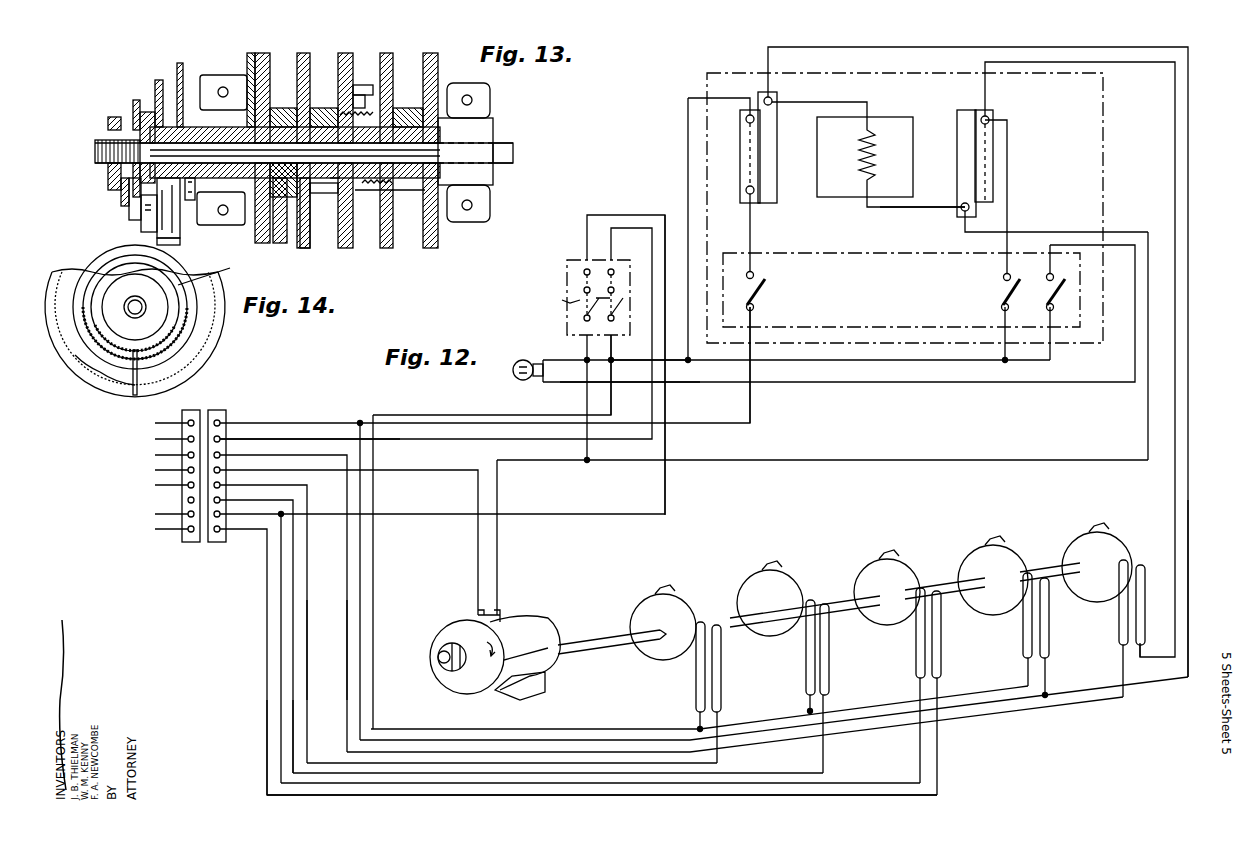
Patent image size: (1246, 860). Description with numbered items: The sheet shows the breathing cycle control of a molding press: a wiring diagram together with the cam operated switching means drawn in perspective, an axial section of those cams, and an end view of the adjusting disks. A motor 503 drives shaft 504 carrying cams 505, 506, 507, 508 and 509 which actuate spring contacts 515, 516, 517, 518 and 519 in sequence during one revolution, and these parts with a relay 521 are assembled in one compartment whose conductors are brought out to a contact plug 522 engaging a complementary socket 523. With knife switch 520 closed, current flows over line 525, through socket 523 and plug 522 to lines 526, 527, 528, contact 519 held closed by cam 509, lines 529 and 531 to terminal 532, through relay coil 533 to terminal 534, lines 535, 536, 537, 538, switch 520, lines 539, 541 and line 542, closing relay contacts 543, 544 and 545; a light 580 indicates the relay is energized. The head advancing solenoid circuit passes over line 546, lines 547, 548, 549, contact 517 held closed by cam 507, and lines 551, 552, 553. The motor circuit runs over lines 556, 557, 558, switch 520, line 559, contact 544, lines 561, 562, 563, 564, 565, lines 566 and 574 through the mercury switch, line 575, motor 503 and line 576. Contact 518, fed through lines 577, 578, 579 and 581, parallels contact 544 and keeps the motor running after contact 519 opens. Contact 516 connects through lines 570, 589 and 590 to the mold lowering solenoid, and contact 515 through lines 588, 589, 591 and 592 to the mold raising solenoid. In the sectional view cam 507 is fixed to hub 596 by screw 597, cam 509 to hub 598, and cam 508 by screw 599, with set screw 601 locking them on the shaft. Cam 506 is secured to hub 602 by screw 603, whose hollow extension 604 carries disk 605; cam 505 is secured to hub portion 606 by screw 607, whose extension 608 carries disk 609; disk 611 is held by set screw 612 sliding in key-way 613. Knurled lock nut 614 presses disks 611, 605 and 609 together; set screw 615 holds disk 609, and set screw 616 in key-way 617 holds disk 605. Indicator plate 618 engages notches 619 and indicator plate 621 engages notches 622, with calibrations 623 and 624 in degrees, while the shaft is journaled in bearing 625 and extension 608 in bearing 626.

In FIG. 12, the motor 503 is at (535, 617).
In FIG. 13, the shaft 504 is at (505, 143).
In FIG. 14, the shaft 504 is at (128, 302).
In FIG. 12, the shaft 504 is at (600, 648).
In FIG. 13, the cam 505 is at (263, 56).
In FIG. 12, the cam 505 is at (680, 600).
In FIG. 13, the cam 506 is at (304, 56).
In FIG. 12, the cam 506 is at (780, 575).
In FIG. 13, the cam 507 is at (345, 56).
In FIG. 12, the cam 507 is at (900, 565).
In FIG. 13, the cam 508 is at (387, 56).
In FIG. 12, the cam 508 is at (1000, 548).
In FIG. 13, the cam 509 is at (432, 56).
In FIG. 12, the cam 509 is at (1103, 535).
In FIG. 12, the spring contact 515 is at (722, 665).
In FIG. 12, the spring contact 516 is at (830, 655).
In FIG. 12, the spring contact 517 is at (942, 640).
In FIG. 12, the spring contact 518 is at (1050, 625).
In FIG. 12, the spring contact 519 is at (1120, 625).
In FIG. 12, the knife switch 520 is at (567, 290).
In FIG. 12, the relay 521 is at (1103, 145).
In FIG. 12, the contact plug 522 is at (226, 412).
In FIG. 12, the socket 523 is at (191, 542).
In FIG. 12, the line 525 is at (146, 422).
In FIG. 12, the line 526 is at (318, 423).
In FIG. 12, the line 527 is at (362, 583).
In FIG. 12, the line 528 is at (760, 720).
In FIG. 12, the line 529 is at (1188, 310).
In FIG. 12, the line 531 is at (900, 49).
In FIG. 12, the relay terminal 532 is at (777, 100).
In FIG. 12, the relay coil 533 is at (875, 125).
In FIG. 12, the relay terminal 534 is at (950, 212).
In FIG. 12, the line 535 is at (1053, 225).
In FIG. 12, the line 536 is at (1148, 413).
In FIG. 12, the line 537 is at (862, 460).
In FIG. 12, the line 538 is at (578, 390).
In FIG. 12, the line 539 is at (668, 404).
In FIG. 12, the line 541 is at (590, 515).
In FIG. 12, the line 542 is at (146, 513).
In FIG. 12, the relay contact 543 is at (760, 292).
In FIG. 12, the relay contact 544 is at (1002, 295).
In FIG. 12, the relay contact 545 is at (1068, 290).
In FIG. 12, the line 546 is at (146, 528).
In FIG. 12, the line 547 is at (267, 650).
In FIG. 12, the line 548 is at (640, 796).
In FIG. 12, the line 549 is at (938, 750).
In FIG. 12, the line 551 is at (910, 770).
In FIG. 12, the line 552 is at (400, 796).
In FIG. 12, the line 553 is at (267, 736).
In FIG. 12, the line 556 is at (146, 438).
In FIG. 12, the line 557 is at (440, 440).
In FIG. 12, the line 558 is at (648, 334).
In FIG. 12, the line 559 is at (822, 362).
In FIG. 12, the line 561 is at (1055, 63).
In FIG. 12, the line 562 is at (188, 500).
In FIG. 12, the line 563 is at (1042, 697).
In FIG. 12, the line 564 is at (347, 635).
In FIG. 12, the line 565 is at (268, 455).
In FIG. 12, the line 566 is at (146, 454).
In FIG. 12, the line 570 is at (778, 773).
In FIG. 12, the line 574 is at (144, 468).
In FIG. 12, the line 575 is at (397, 471).
In FIG. 12, the line 576 is at (499, 562).
In FIG. 12, the line 577 is at (611, 404).
In FIG. 12, the line 578 is at (458, 415).
In FIG. 12, the line 579 is at (375, 548).
In FIG. 12, the signal lamp 580 is at (523, 360).
In FIG. 12, the line 581 is at (612, 729).
In FIG. 12, the line 588 is at (500, 796).
In FIG. 12, the line 589 is at (307, 570).
In FIG. 12, the line 590 is at (280, 540).
In FIG. 12, the line 591 is at (302, 485).
In FIG. 12, the line 592 is at (158, 484).
In FIG. 13, the hub 596 is at (345, 180).
In FIG. 13, the screw 597 is at (363, 85).
In FIG. 13, the hub 598 is at (408, 110).
In FIG. 13, the screw 599 is at (405, 195).
In FIG. 13, the set screw 601 is at (358, 108).
In FIG. 13, the hub 602 is at (324, 108).
In FIG. 13, the screw 603 is at (310, 210).
In FIG. 13, the hollow extension 604 is at (137, 100).
In FIG. 13, the disk 605 is at (159, 80).
In FIG. 14, the disk 605 is at (78, 280).
In FIG. 13, the hub portion 606 is at (283, 108).
In FIG. 13, the screw 607 is at (280, 226).
In FIG. 13, the hollow central extension 608 is at (251, 56).
In FIG. 13, the disk 609 is at (180, 63).
In FIG. 14, the disk 609 is at (190, 355).
In FIG. 13, the disk 611 is at (147, 112).
In FIG. 14, the disk 611 is at (170, 285).
In FIG. 13, the set screw 612 is at (122, 190).
In FIG. 13, the key-way 613 is at (96, 148).
In FIG. 13, the knurled lock nut 614 is at (112, 118).
In FIG. 14, the knurled lock nut 614 is at (142, 298).
In FIG. 13, the set screw 615 is at (191, 200).
In FIG. 13, the set screw 616 is at (162, 232).
In FIG. 13, the key-way 617 is at (130, 196).
In FIG. 13, the indicator plate 618 is at (158, 242).
In FIG. 14, the indicator plate 618 is at (140, 388).
In FIG. 14, the notches 619 is at (110, 378).
In FIG. 13, the indicator plate 621 is at (142, 215).
In FIG. 14, the indicator plate 621 is at (92, 364).
In FIG. 14, the notches 622 is at (214, 274).
In FIG. 14, the degree calibration 623 is at (182, 338).
In FIG. 14, the degree calibration 624 is at (178, 320).
In FIG. 13, the bearing 625 is at (493, 178).
In FIG. 13, the bearing 626 is at (222, 76).